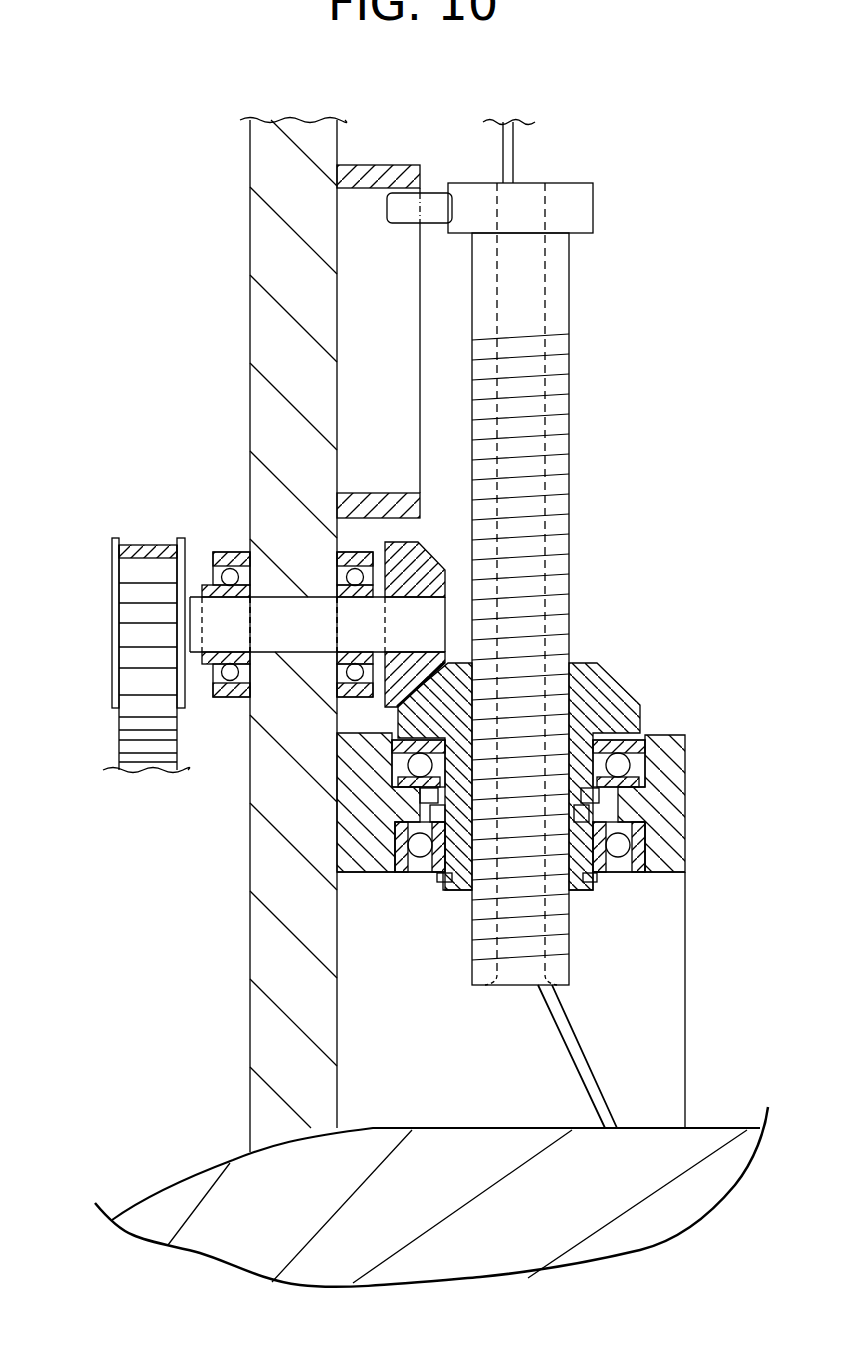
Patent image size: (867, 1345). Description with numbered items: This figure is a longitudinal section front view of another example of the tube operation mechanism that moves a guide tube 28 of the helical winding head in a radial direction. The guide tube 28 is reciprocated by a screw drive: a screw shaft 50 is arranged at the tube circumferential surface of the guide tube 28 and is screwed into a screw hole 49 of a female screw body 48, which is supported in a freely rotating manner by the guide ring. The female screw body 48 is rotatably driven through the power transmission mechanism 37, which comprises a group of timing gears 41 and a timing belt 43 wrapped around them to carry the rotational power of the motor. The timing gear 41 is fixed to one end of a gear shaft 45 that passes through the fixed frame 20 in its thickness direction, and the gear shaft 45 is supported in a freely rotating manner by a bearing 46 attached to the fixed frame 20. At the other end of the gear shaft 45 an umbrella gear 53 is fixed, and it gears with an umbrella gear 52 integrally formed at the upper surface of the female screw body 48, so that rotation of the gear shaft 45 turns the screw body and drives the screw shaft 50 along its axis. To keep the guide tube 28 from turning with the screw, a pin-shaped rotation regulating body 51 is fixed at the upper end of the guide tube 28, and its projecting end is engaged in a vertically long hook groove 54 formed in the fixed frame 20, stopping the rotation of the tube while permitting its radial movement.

The fixed frame 20 is at (255, 322).
The guide tube 28 is at (570, 287).
The power transmission mechanism 37 is at (98, 728).
The timing gear 41 is at (112, 625).
The timing belt 43 is at (150, 541).
The gear shaft 45 is at (292, 646).
The bearing 46 is at (226, 568).
The female screw body 48 is at (597, 695).
The screw hole 49 is at (565, 677).
The screw shaft 50 is at (570, 518).
The rotation regulating body 51 is at (432, 193).
The umbrella gear 52 is at (628, 695).
The umbrella gear 53 is at (436, 548).
The hook groove 54 is at (415, 318).